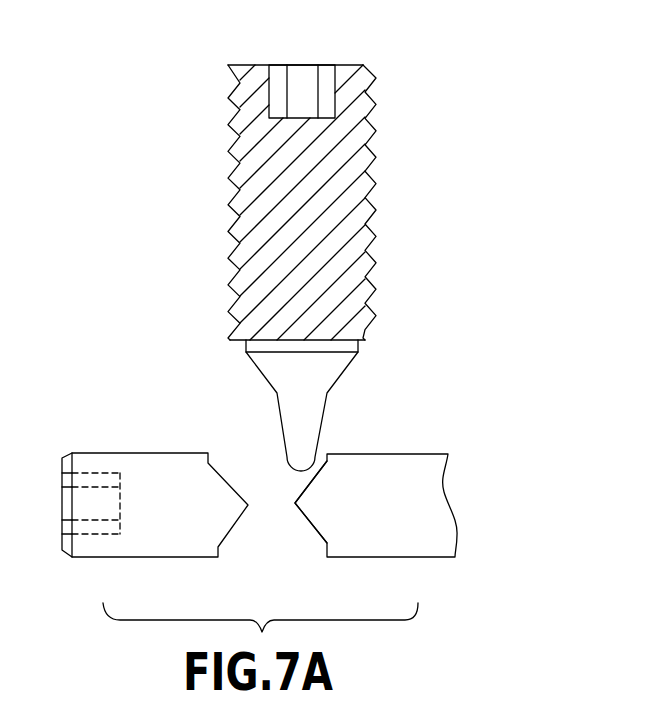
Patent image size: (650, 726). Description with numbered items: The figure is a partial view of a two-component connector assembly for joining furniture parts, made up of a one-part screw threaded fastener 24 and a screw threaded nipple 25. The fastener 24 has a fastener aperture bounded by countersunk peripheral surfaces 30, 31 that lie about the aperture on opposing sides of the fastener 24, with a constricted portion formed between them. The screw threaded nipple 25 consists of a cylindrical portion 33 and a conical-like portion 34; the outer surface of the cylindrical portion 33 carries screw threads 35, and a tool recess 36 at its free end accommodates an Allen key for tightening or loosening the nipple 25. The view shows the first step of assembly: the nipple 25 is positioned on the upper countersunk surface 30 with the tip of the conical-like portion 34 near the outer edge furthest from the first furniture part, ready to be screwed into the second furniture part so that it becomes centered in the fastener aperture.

The screw threaded fastener 24 is at (430, 543).
The screw threaded nipple 25 is at (227, 220).
The countersunk peripheral surface 30 is at (225, 477).
The countersunk peripheral surface 31 is at (312, 528).
The cylindrical portion 33 is at (335, 199).
The conical-like portion 34 is at (343, 375).
The screw threads 35 is at (377, 135).
The tool recess 36 is at (299, 92).